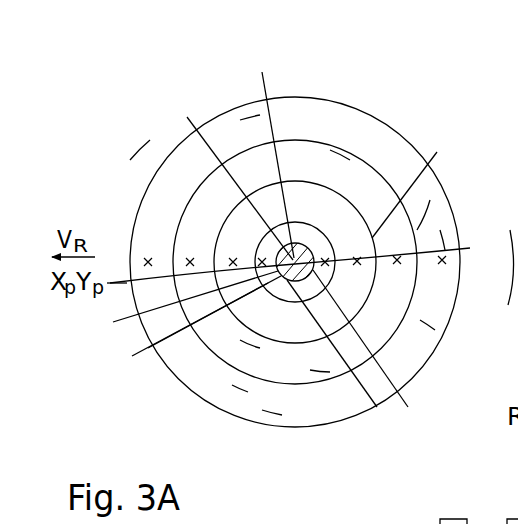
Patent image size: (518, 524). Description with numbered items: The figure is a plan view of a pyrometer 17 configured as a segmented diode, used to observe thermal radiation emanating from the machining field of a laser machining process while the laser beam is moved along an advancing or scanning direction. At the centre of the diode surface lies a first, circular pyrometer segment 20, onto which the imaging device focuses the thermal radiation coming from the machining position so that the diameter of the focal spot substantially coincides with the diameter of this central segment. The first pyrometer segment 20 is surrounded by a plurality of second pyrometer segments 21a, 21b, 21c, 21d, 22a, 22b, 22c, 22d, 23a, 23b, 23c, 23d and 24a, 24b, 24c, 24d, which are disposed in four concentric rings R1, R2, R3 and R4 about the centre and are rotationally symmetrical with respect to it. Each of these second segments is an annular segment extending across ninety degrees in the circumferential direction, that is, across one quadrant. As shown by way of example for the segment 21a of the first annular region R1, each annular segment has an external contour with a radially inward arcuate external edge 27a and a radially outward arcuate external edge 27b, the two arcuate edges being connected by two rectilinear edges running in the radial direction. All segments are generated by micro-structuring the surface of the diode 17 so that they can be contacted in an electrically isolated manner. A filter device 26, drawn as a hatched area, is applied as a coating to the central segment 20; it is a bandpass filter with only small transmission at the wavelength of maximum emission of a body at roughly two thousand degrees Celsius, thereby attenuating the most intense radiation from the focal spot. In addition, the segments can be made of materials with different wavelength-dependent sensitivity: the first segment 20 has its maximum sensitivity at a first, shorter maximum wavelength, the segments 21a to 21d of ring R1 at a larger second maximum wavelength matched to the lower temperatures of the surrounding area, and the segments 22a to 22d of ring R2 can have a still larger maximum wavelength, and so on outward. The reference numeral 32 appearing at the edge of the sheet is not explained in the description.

The pyrometer 17 is at (117, 127).
The first pyrometer segment 20 is at (309, 248).
The second pyrometer segment 21a is at (230, 172).
The second pyrometer segment 21b is at (269, 151).
The second pyrometer segment 21c is at (422, 185).
The second pyrometer segment 21d is at (383, 349).
The second pyrometer segment 22a is at (233, 240).
The second pyrometer segment 22b is at (352, 175).
The second pyrometer segment 22c is at (340, 258).
The second pyrometer segment 22d is at (250, 330).
The second pyrometer segment 23a is at (198, 250).
The second pyrometer segment 23b is at (345, 170).
The second pyrometer segment 23c is at (435, 256).
The second pyrometer segment 23d is at (323, 363).
The second pyrometer segment 24a is at (150, 258).
The second pyrometer segment 24b is at (252, 112).
The second pyrometer segment 24c is at (428, 317).
The second pyrometer segment 24d is at (278, 405).
The filter device 26 is at (240, 385).
The radially inward arcuate external edge 27a is at (189, 328).
The radially outward arcuate external edge 27b is at (176, 306).
The first annular region R1 is at (260, 242).
The second annular region R2 is at (270, 203).
The third annular region R3 is at (297, 150).
The fourth annular region R4 is at (318, 125).
The detector element 32 is at (428, 522).